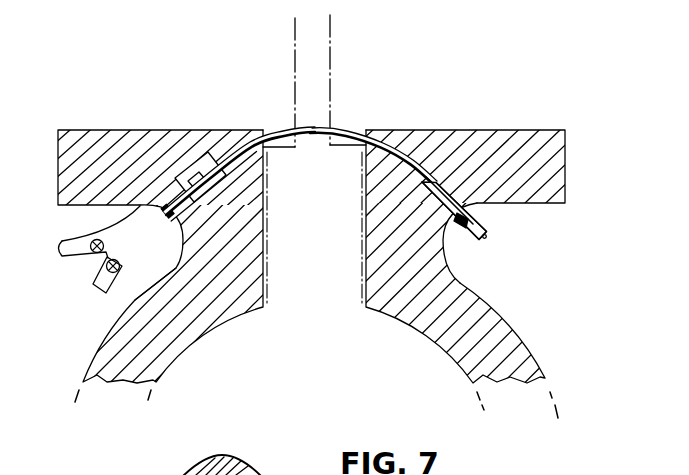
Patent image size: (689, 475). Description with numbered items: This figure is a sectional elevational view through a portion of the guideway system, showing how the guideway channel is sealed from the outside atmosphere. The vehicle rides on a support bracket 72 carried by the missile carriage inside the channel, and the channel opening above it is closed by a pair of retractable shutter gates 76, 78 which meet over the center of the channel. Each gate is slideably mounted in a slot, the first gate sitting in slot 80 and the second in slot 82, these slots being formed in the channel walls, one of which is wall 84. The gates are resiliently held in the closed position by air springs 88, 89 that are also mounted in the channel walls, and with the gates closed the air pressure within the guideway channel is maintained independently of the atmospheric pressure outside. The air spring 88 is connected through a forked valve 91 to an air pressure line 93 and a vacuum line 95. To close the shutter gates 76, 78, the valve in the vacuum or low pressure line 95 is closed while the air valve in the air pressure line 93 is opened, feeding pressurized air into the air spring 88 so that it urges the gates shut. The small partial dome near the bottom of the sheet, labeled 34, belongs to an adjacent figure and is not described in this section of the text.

The support bracket 72 is at (330, 82).
The retractable shutter gate 76 is at (272, 134).
The retractable shutter gate 78 is at (347, 133).
The slot 80 is at (242, 145).
The slot 82 is at (407, 139).
The wall 84 is at (139, 148).
The air spring 88 is at (141, 209).
The air spring 89 is at (446, 185).
The forked valve 91 is at (139, 236).
The air pressure line 93 is at (77, 235).
The vacuum line 95 is at (113, 280).
The dome of adjacent figure 34 is at (150, 473).